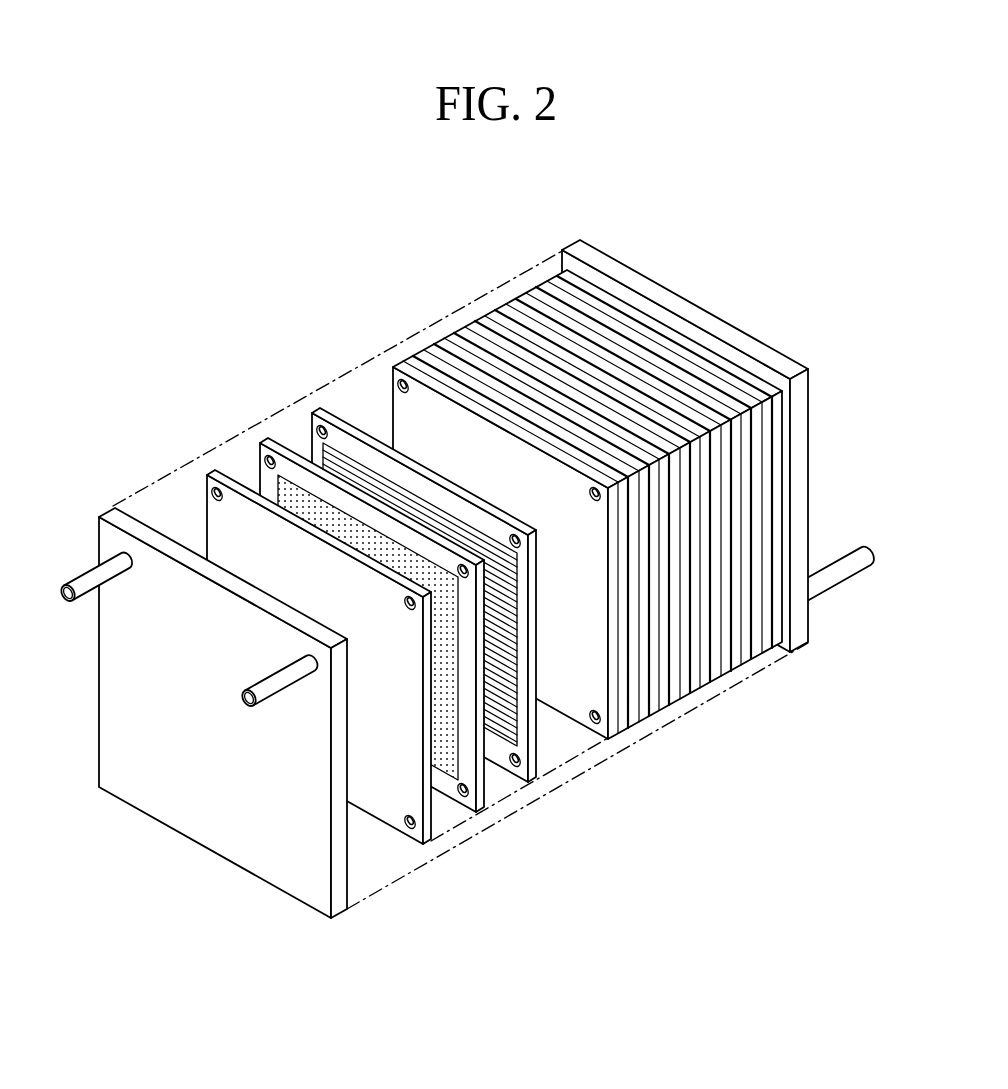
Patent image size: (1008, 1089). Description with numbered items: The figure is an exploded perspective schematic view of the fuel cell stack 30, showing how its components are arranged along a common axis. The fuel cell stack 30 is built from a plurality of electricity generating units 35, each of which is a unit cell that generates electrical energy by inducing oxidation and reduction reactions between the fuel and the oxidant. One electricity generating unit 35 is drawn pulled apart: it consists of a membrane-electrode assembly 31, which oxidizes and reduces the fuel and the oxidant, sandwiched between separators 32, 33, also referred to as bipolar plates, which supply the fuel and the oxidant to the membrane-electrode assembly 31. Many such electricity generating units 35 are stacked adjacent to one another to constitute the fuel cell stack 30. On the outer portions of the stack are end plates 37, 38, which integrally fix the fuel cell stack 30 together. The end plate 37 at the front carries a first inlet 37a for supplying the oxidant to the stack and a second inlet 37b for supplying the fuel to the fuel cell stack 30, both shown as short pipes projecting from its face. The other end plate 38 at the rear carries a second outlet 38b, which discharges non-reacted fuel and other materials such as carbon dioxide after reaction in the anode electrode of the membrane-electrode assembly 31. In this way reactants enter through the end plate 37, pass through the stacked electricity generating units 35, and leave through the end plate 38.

The fuel cell stack 30 is at (357, 247).
The membrane-electrode assembly 31 is at (490, 795).
The separator 32 is at (432, 823).
The separator 33 is at (542, 767).
The electricity generating unit 35 is at (617, 843).
The end plate 37 is at (222, 828).
The first inlet 37a is at (88, 578).
The second inlet 37b is at (265, 687).
The end plate 38 is at (762, 358).
The second outlet 38b is at (846, 568).